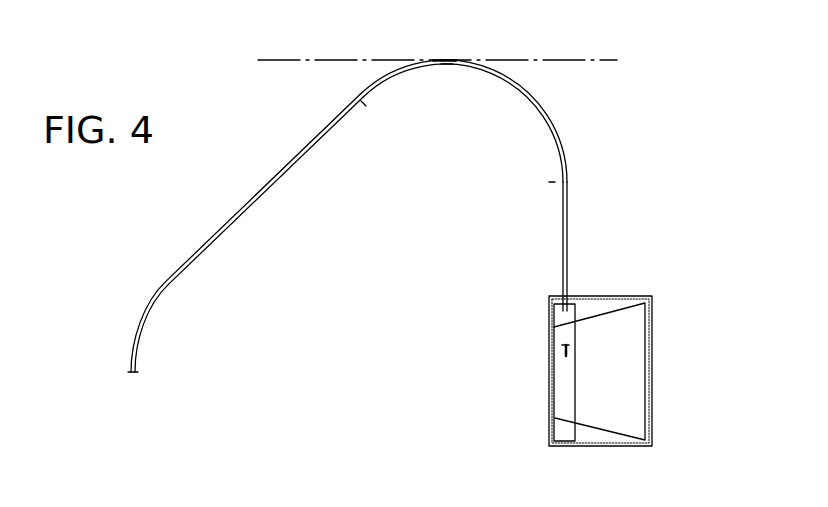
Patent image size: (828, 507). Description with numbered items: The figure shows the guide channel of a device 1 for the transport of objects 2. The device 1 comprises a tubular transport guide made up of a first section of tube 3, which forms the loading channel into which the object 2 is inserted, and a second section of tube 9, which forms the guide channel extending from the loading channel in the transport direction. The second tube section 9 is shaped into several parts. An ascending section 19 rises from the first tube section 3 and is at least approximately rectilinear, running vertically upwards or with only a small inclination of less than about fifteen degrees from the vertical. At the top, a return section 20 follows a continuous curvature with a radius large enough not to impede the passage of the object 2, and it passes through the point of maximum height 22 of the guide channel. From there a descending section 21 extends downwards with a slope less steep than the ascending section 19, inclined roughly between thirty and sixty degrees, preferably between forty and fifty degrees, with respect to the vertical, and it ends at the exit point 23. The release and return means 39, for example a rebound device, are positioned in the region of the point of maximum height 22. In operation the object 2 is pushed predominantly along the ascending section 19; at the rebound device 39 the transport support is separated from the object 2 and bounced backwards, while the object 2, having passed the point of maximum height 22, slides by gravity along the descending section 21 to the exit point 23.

The device 1 is at (622, 255).
The object 2 is at (556, 353).
The first section of tube 3 is at (560, 331).
The second section of tube 9 is at (566, 151).
The ascending section 19 is at (562, 232).
The return section 20 is at (508, 85).
The descending section 21 is at (270, 188).
The point of maximum height 22 is at (447, 60).
The exit point 23 is at (130, 372).
The release and return means 39 is at (447, 63).